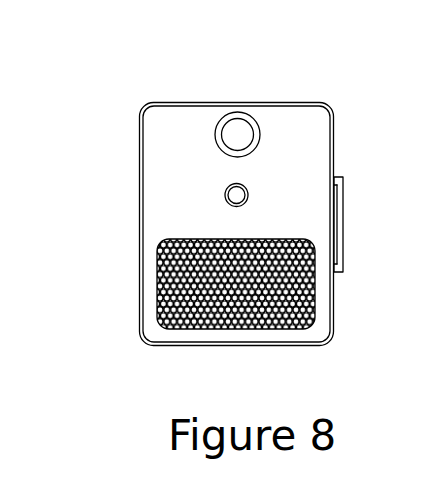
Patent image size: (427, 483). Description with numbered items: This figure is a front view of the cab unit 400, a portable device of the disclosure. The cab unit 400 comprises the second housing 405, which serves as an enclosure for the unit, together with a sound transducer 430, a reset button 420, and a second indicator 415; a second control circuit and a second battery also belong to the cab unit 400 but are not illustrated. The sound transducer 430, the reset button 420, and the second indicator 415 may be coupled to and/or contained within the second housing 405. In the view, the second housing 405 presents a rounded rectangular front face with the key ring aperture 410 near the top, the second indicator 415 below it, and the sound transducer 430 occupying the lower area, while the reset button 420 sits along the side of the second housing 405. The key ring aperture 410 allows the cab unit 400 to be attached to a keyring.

The cab unit 400 is at (92, 104).
The second housing 405 is at (302, 102).
The key ring aperture 410 is at (238, 130).
The second indicator 415 is at (240, 192).
The reset button 420 is at (342, 230).
The sound transducer 430 is at (167, 327).